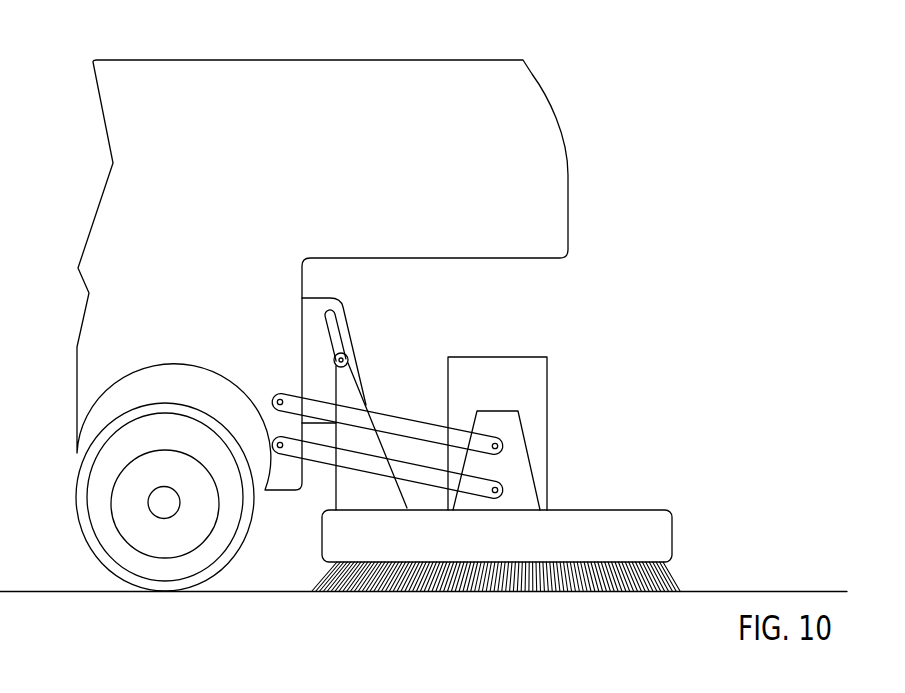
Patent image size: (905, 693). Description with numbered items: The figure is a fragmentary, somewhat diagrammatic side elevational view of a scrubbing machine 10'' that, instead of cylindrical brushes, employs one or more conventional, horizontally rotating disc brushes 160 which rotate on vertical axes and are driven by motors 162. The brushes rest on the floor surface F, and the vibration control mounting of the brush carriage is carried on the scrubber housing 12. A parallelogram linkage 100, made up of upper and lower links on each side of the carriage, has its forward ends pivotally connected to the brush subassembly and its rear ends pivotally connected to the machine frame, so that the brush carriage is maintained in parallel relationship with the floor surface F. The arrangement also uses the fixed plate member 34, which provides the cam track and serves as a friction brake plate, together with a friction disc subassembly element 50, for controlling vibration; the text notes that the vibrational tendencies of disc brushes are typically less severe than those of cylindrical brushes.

The scrubbing machine 10'' is at (712, 99).
The scrubber housing 12 is at (545, 72).
The fixed plate member 34 is at (312, 307).
The friction disc subassembly element 50 is at (348, 352).
The parallelogram linkage 100 is at (386, 391).
The disc brushes 160 is at (660, 572).
The motors 162 is at (537, 400).
The floor surface F is at (776, 590).